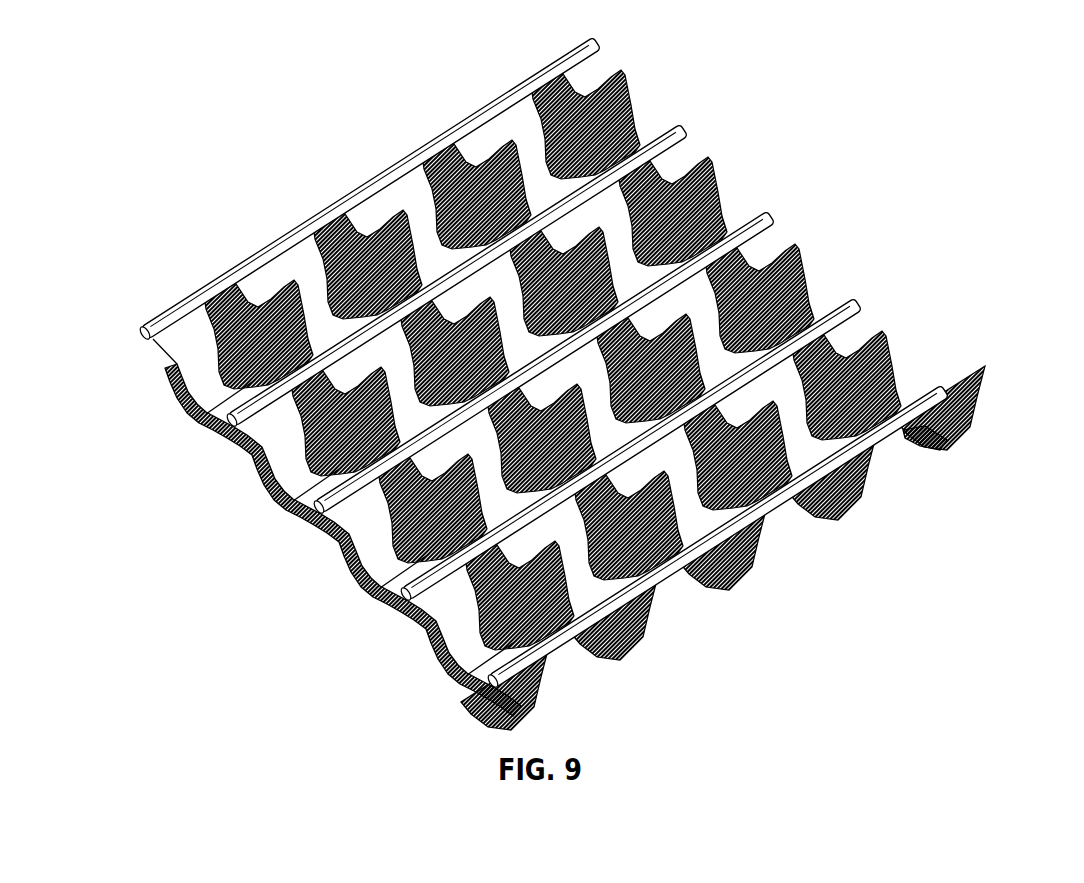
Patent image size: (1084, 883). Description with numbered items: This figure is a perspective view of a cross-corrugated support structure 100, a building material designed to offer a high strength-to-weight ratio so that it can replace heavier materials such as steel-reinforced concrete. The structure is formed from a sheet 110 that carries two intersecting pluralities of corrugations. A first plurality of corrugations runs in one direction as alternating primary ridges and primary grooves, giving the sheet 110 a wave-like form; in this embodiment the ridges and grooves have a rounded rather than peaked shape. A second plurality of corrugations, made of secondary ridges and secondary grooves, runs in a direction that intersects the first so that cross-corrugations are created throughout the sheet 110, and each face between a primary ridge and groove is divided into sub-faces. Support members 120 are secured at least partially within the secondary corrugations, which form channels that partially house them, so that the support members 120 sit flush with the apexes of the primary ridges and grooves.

The cross-corrugated support structure 100 is at (205, 62).
The sheet 110 is at (608, 108).
The support members 120 is at (148, 327).